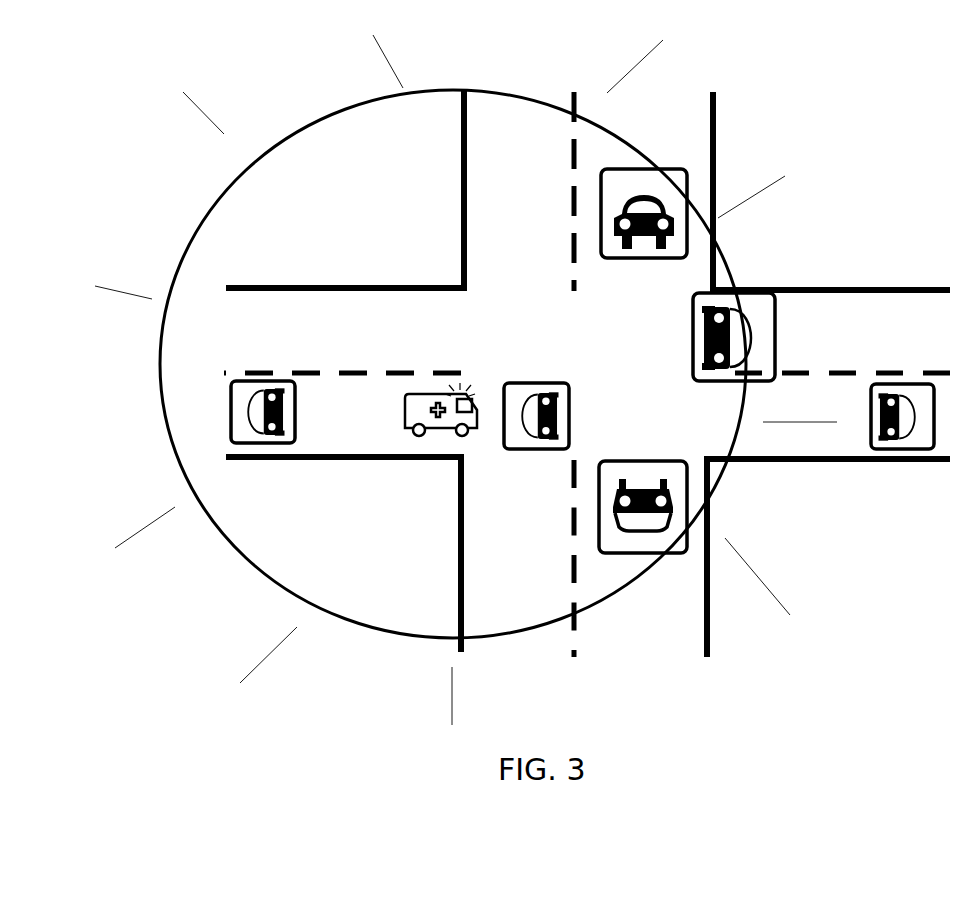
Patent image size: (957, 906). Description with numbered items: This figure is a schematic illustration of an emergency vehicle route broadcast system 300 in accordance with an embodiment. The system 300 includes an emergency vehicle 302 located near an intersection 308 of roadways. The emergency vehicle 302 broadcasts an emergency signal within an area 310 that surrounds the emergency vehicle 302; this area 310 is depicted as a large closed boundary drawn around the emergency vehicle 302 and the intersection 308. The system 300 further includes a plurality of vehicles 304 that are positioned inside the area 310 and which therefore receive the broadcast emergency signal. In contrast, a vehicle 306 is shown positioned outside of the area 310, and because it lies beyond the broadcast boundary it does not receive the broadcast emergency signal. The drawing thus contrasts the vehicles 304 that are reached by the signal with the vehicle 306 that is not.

The emergency vehicle route broadcast system 300 is at (868, 125).
The emergency vehicle 302 is at (470, 390).
The vehicles 304 is at (621, 169).
The vehicle 306 is at (912, 383).
The intersection 308 is at (460, 285).
The area 310 is at (235, 180).